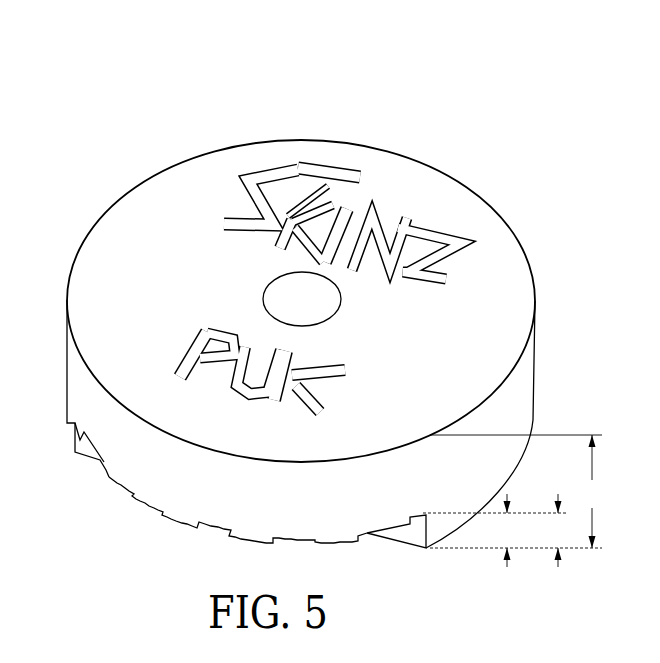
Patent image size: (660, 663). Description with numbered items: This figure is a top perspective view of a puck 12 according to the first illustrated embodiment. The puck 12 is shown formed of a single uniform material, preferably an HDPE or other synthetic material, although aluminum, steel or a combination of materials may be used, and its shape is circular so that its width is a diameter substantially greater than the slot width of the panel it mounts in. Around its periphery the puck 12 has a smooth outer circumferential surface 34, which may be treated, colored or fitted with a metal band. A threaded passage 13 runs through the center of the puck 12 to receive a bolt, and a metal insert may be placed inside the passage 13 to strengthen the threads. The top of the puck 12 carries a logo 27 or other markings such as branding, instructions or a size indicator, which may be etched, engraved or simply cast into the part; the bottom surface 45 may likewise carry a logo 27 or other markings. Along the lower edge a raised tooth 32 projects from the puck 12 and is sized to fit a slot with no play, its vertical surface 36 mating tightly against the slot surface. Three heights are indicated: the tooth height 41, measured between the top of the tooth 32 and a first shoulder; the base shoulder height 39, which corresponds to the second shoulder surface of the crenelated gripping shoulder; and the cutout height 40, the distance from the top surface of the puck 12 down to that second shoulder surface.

The puck 12 is at (203, 133).
The passage 13 is at (295, 300).
The logo 27 is at (310, 165).
The raised tooth 32 is at (512, 472).
The outer surface 34 is at (458, 486).
The vertical surface 36 is at (403, 532).
The base shoulder height 39 is at (516, 491).
The cutout height 40 is at (516, 530).
The tooth height 41 is at (495, 530).
The bottom surface 45 is at (415, 197).